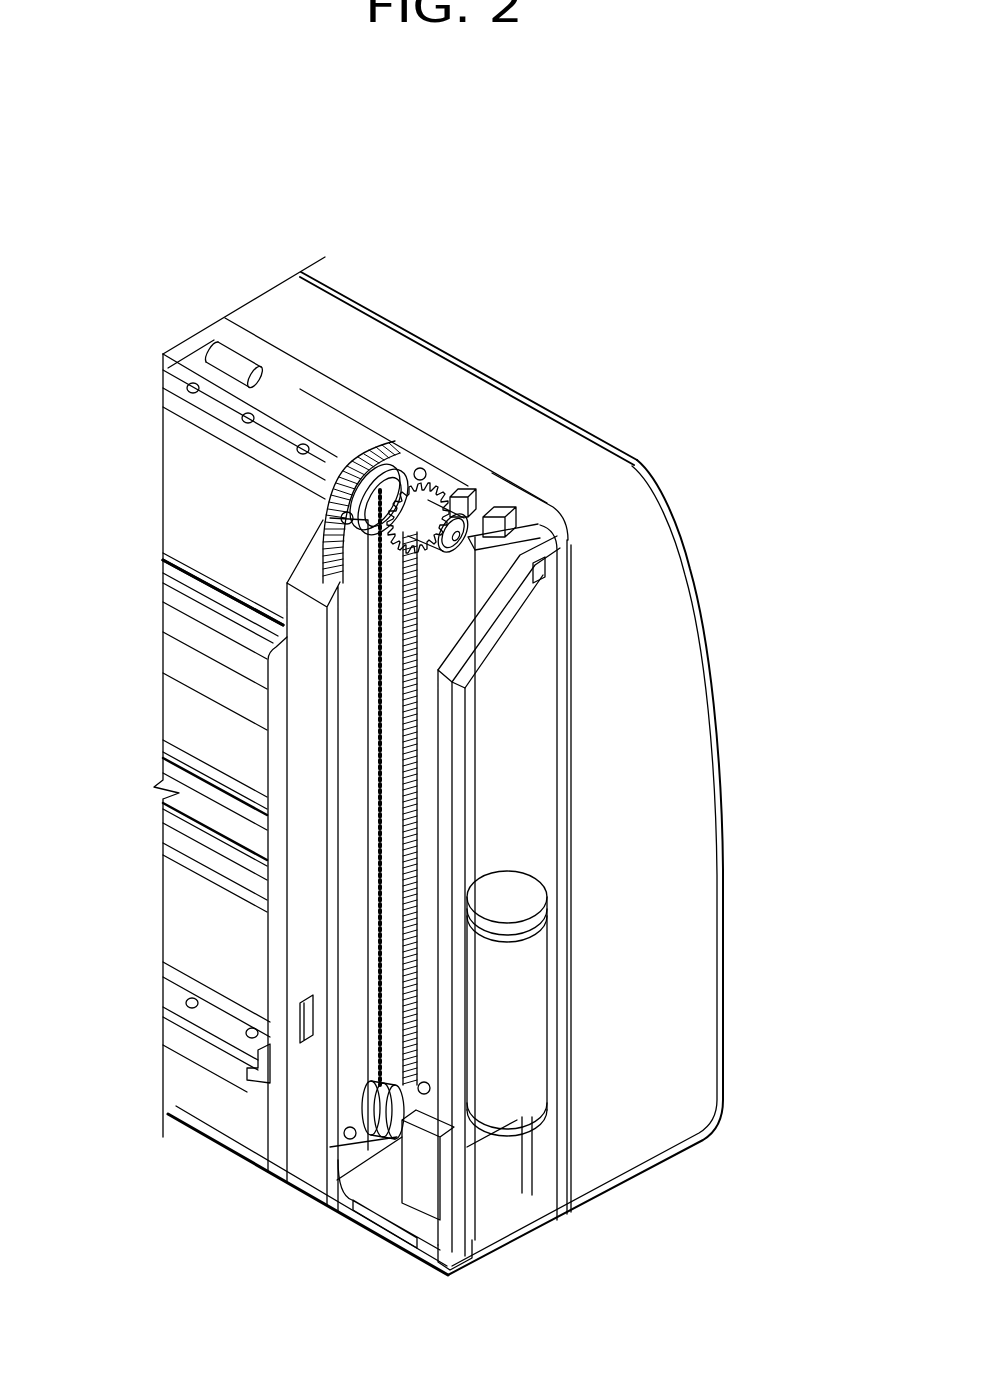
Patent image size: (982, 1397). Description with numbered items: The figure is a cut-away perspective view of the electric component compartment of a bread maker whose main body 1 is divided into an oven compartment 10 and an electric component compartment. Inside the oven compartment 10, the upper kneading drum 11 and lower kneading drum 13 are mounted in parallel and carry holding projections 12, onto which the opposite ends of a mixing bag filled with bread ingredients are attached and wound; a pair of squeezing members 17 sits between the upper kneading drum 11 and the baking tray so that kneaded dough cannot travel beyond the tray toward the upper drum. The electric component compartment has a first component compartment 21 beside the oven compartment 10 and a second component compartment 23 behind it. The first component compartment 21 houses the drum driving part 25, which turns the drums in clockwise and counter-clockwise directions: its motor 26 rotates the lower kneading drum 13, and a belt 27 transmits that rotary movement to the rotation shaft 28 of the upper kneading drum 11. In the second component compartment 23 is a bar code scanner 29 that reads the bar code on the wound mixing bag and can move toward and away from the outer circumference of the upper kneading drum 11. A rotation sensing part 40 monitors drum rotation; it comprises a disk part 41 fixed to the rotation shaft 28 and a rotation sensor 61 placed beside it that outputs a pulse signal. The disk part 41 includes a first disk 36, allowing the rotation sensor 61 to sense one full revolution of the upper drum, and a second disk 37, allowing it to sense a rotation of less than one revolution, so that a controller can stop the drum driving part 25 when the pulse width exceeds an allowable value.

The main body 1 is at (705, 546).
The oven compartment 10 is at (185, 733).
The upper kneading drum 11 is at (203, 413).
The holding projections 12 is at (187, 385).
The lower kneading drum 13 is at (205, 1032).
The squeezing members 17 is at (183, 588).
The first component compartment 21 is at (539, 792).
The second component compartment 23 is at (357, 333).
The drum driving part 25 is at (398, 1101).
The motor 26 is at (427, 1190).
The belt 27 is at (395, 1140).
The rotation shaft 28 is at (403, 493).
The bar code scanner 29 is at (235, 363).
The first disk 36 is at (481, 512).
The second disk 37 is at (430, 478).
The rotation sensing part 40 is at (508, 667).
The disk part 41 is at (471, 681).
The rotation sensor 61 is at (514, 512).